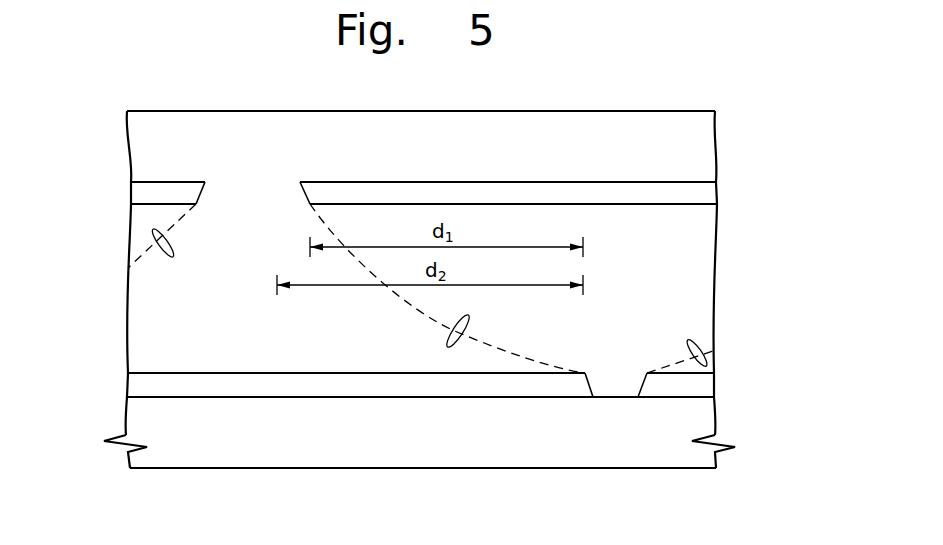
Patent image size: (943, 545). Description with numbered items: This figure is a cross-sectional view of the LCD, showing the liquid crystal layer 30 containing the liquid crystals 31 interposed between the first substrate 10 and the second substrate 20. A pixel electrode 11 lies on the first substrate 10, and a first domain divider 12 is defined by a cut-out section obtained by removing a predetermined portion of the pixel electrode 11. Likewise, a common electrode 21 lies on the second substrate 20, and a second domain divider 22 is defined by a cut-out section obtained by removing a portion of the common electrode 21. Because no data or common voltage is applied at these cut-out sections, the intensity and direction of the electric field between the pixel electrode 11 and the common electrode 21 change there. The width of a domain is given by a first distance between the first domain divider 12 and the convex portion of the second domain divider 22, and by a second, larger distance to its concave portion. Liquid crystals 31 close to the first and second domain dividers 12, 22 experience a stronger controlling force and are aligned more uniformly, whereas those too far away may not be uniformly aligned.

The first substrate 10 is at (705, 424).
The pixel electrode 11 is at (145, 385).
The first domain divider 12 is at (617, 369).
The second substrate 20 is at (705, 138).
The common electrode 21 is at (142, 194).
The second domain divider 22 is at (230, 208).
The liquid crystal layer 30 is at (705, 244).
The liquid crystals 31 is at (142, 250).